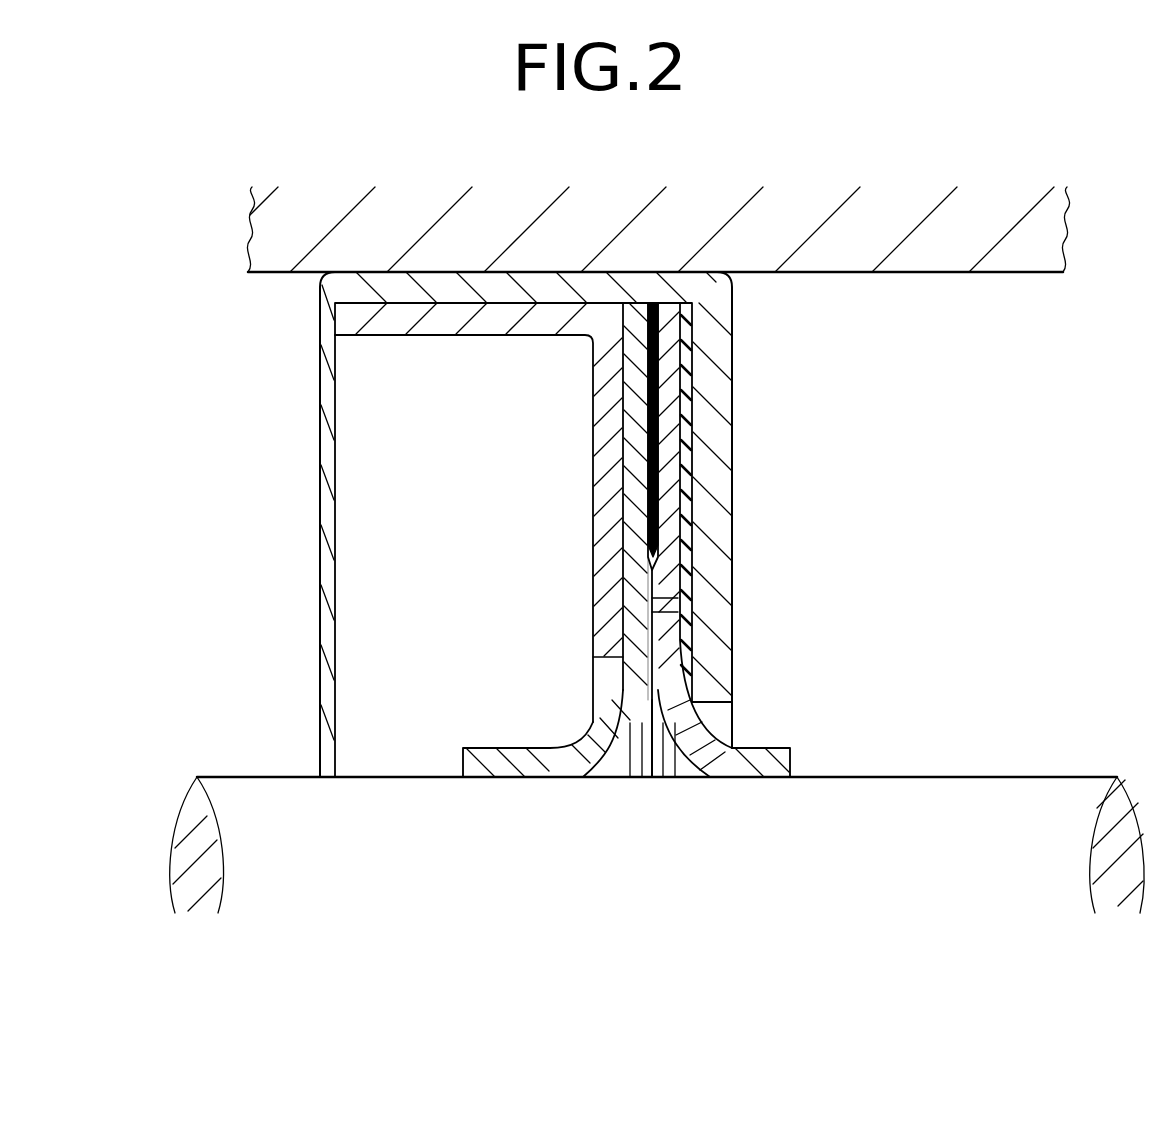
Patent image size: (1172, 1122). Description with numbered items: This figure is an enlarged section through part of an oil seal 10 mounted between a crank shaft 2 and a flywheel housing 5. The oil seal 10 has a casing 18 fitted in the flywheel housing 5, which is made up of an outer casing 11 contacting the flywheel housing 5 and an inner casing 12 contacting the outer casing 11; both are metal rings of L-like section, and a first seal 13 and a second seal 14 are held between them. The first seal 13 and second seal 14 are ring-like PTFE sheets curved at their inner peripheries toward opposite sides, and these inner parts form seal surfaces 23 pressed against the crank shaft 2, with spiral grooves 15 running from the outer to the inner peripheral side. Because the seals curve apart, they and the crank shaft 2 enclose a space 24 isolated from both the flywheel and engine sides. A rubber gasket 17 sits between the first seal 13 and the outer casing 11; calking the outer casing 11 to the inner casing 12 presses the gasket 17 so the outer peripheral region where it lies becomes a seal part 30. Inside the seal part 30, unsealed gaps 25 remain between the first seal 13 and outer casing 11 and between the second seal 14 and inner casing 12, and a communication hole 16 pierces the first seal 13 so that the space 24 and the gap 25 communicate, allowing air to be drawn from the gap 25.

The crank shaft 2 is at (235, 790).
The flywheel housing 5 is at (262, 222).
The oil seal 10 is at (559, 568).
The outer casing 11 is at (723, 331).
The inner casing 12 is at (502, 323).
The first seal 13 is at (770, 748).
The second seal 14 is at (483, 748).
The spiral grooves 15 is at (567, 779).
The communication hole 16 is at (683, 600).
The gasket 17 is at (688, 463).
The casing 18 is at (601, 524).
The seal surfaces 23 is at (494, 779).
The space 24 is at (631, 779).
The gaps 25 is at (650, 600).
The seal part 30 is at (687, 423).